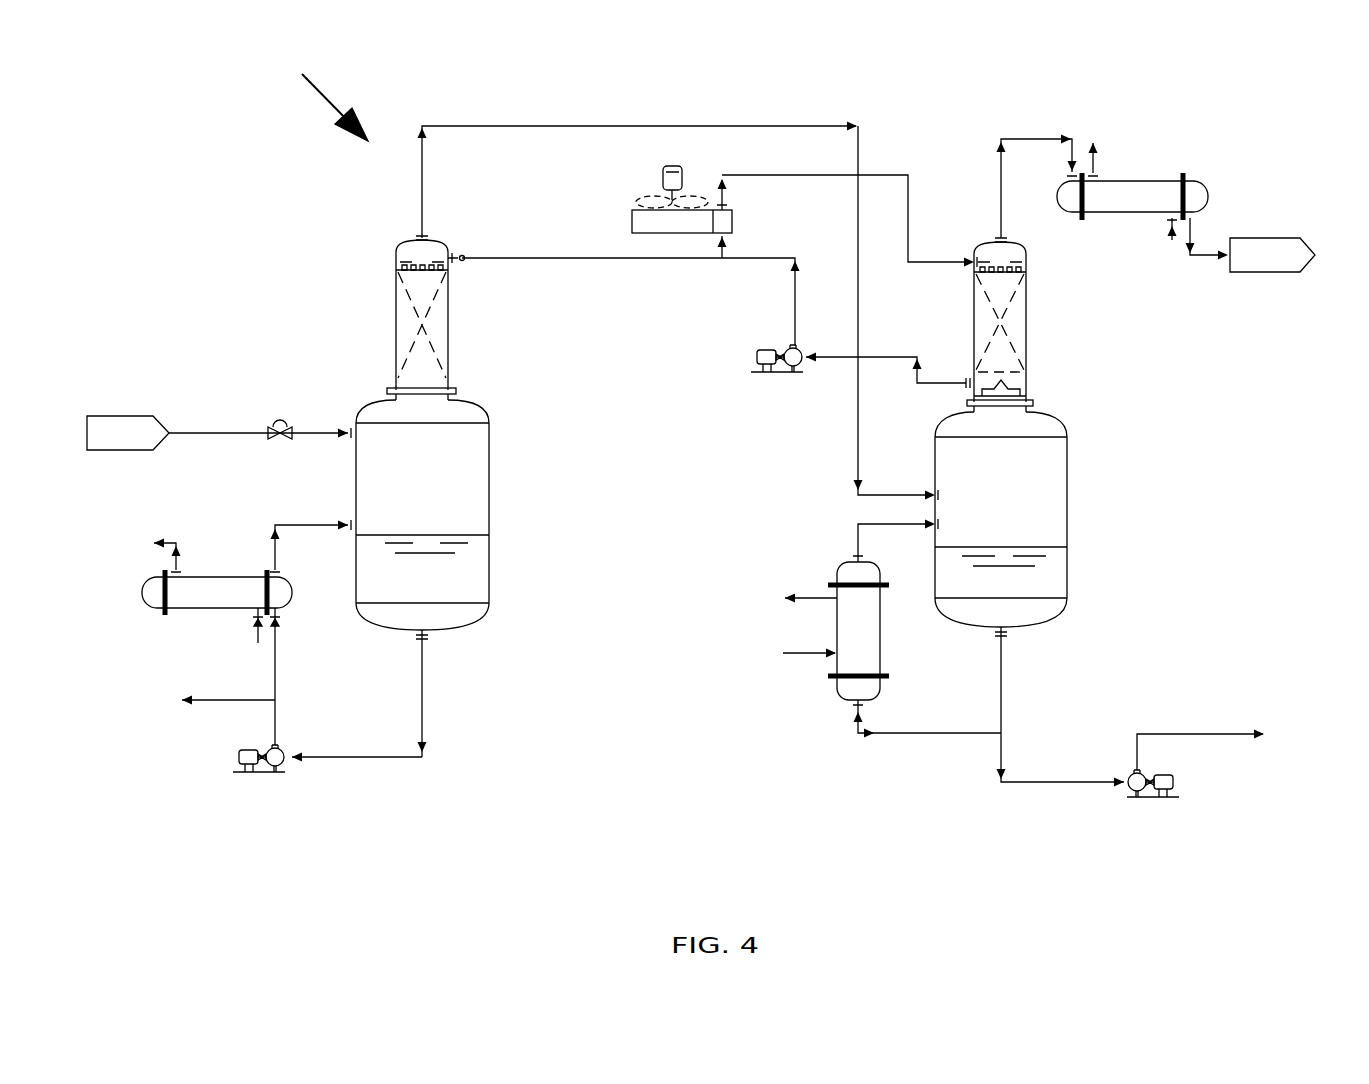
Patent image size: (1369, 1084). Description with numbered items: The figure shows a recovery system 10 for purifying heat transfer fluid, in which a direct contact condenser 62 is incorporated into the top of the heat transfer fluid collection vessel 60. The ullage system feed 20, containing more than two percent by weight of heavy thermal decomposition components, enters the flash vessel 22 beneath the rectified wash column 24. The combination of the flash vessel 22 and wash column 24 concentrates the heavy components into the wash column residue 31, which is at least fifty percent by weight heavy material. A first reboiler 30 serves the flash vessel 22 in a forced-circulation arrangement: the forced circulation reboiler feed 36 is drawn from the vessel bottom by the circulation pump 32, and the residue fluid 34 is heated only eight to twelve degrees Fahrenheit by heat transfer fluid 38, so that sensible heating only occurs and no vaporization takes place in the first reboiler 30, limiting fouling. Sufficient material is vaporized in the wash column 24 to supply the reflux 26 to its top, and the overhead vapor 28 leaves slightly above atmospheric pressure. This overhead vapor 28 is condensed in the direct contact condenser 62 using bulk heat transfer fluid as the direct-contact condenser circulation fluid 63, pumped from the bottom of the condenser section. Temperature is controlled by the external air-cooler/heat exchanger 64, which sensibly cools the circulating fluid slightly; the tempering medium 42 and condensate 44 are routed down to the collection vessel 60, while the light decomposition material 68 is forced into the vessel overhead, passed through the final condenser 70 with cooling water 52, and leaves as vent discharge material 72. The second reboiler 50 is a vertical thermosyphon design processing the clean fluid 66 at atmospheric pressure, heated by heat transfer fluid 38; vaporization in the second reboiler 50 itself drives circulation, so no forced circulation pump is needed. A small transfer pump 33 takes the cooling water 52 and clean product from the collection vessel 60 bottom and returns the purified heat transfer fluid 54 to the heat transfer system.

The recovery system 10 is at (296, 67).
The ullage system feed 20 is at (219, 433).
The flash vessel 22 is at (415, 507).
The wash column 24 is at (407, 318).
The reflux 26 is at (709, 309).
The overhead vapor 28 is at (638, 168).
The first reboiler 30 is at (217, 592).
The wash column residue 31 is at (212, 700).
The circulation pump 32 is at (327, 742).
The small transfer pump 33 is at (1153, 800).
The residue fluid 34 is at (310, 623).
The forced circulation reboiler feed 36 is at (436, 693).
The heat transfer fluid 38 is at (258, 643).
The tempering medium 42 is at (843, 266).
The condensate 44 is at (883, 428).
The second reboiler 50 is at (858, 630).
The cooling water 52 is at (1138, 240).
The purified heat transfer fluid 54 is at (1218, 748).
The collection vessel 60 is at (1001, 524).
The direct contact condenser 62 is at (984, 325).
The direct-contact condenser circulation fluid 63 is at (848, 206).
The air-cooler/heat exchanger 64 is at (682, 200).
The thermosyphon reboiler circulation fluid-clean fluid 66 is at (928, 628).
The decomposition material 68 is at (1021, 187).
The final condenser 70 is at (1132, 197).
The vent discharge material 72 is at (1251, 245).